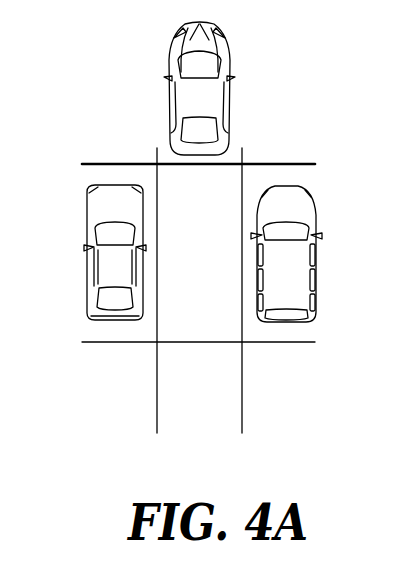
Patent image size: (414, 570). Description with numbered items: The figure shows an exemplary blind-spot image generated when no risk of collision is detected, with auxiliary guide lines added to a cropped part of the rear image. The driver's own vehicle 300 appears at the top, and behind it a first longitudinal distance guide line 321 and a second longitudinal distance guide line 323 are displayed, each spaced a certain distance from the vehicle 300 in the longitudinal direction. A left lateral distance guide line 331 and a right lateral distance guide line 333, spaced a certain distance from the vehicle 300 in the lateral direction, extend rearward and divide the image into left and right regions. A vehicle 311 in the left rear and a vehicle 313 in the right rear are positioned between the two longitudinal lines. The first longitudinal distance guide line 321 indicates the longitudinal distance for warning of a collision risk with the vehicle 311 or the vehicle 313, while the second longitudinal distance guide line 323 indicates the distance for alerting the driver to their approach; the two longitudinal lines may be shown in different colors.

The vehicle 300 is at (228, 105).
The vehicle in the left rear 311 is at (88, 268).
The vehicle in the right rear 313 is at (313, 263).
The first longitudinal distance guide line 321 is at (90, 162).
The second longitudinal distance guide line 323 is at (93, 344).
The left lateral distance guide line 331 is at (157, 405).
The right lateral distance guide line 333 is at (243, 405).